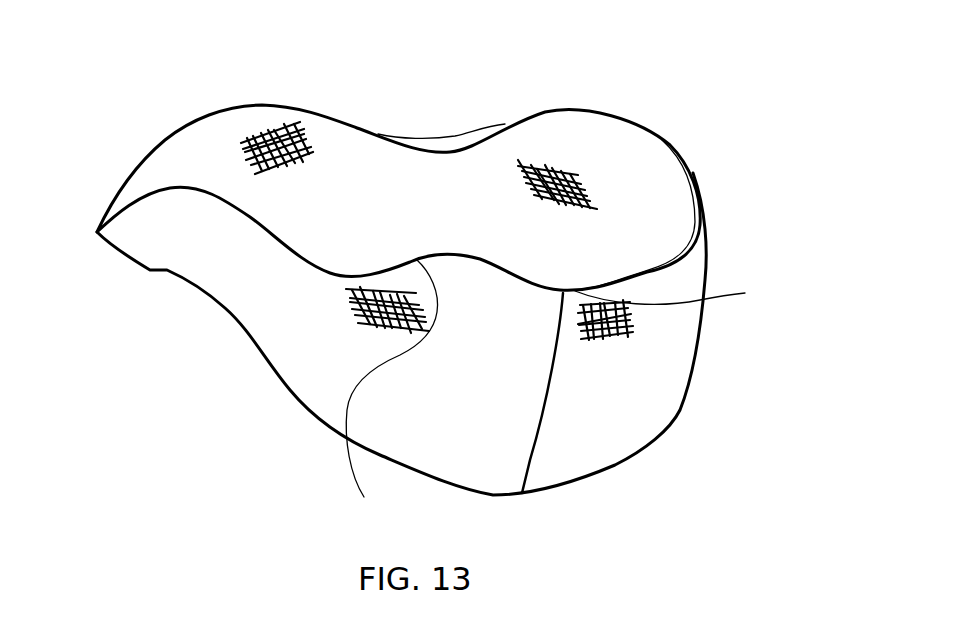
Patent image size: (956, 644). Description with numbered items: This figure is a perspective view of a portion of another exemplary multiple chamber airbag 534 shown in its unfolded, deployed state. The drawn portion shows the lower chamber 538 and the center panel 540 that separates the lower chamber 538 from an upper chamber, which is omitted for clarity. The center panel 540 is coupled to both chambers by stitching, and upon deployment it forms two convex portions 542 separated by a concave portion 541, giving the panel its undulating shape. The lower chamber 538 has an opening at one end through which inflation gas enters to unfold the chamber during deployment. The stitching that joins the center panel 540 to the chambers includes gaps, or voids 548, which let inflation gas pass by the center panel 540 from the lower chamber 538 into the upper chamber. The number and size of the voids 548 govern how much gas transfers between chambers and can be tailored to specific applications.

The airbag 534 is at (163, 413).
The lower chamber 538 is at (600, 448).
The center panel 540 is at (630, 166).
The concave portion 541 is at (408, 116).
The convex portions 542 is at (184, 234).
The gaps (voids) 548 is at (462, 137).